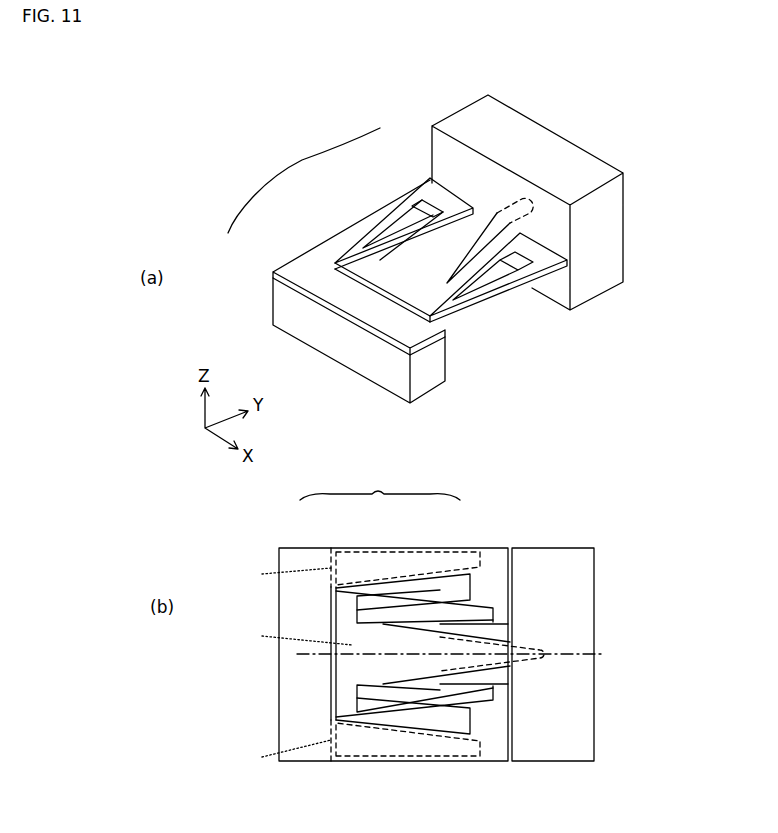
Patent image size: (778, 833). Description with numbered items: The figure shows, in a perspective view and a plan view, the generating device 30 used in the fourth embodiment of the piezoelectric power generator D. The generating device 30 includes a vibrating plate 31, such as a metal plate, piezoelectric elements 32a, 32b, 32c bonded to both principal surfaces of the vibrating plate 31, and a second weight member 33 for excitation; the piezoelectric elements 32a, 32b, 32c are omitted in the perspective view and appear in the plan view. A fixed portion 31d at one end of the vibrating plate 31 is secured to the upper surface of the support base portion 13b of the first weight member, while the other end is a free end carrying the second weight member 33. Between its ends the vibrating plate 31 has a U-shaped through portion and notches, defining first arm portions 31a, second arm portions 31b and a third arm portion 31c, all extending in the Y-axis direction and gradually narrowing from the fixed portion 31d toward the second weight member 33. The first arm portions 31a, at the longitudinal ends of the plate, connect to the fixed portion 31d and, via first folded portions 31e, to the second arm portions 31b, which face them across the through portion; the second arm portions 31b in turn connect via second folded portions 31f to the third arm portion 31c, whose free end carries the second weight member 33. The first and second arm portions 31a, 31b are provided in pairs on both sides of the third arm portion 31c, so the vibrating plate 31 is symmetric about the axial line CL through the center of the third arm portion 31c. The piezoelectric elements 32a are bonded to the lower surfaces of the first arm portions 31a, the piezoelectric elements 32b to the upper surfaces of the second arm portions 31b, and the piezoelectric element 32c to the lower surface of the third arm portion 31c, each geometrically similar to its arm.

The support base portion 13b is at (340, 353).
The generating device 30 is at (488, 342).
The vibrating plate 31 is at (344, 314).
The first arm portions 31a is at (368, 227).
The second arm portions 31b is at (408, 233).
The third arm portion 31c is at (407, 233).
The fixed portion 31d is at (313, 277).
The first folded portions 31e is at (440, 197).
The second folded portions 31f is at (367, 278).
The piezoelectric elements 32a is at (279, 666).
The piezoelectric elements 32b is at (362, 611).
The piezoelectric element 32c is at (290, 633).
The second weight member 33 is at (562, 146).
The piezoelectric power generator D is at (352, 92).
The axial line CL is at (585, 655).